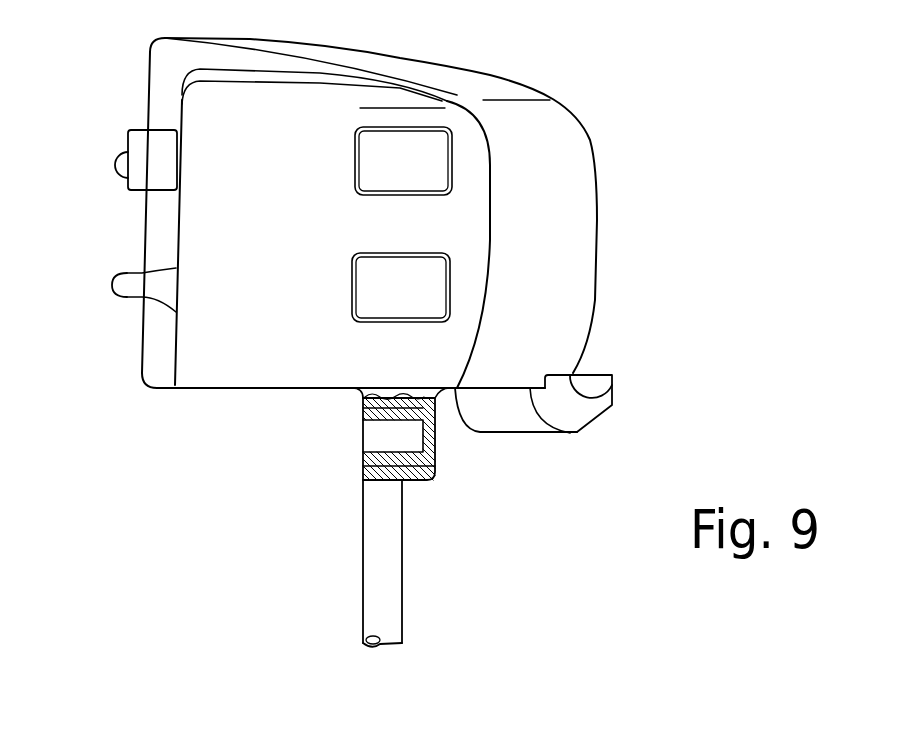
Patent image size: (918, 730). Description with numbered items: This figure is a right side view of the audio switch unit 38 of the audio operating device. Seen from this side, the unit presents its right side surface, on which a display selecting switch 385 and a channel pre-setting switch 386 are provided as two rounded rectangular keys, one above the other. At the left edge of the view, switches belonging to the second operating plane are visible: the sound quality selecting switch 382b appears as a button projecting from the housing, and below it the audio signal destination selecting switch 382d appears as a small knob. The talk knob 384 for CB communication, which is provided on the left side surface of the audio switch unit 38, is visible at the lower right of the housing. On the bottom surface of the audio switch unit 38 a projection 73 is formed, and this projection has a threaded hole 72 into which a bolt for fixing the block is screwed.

The audio switch unit 38 is at (612, 140).
The sound quality selecting switch 382b is at (147, 143).
The audio signal destination selecting switch 382d is at (133, 300).
The talk knob 384 is at (577, 412).
The display selecting switch 385 is at (430, 143).
The channel pre-setting switch 386 is at (372, 308).
The threaded hole 72 is at (386, 450).
The projection 73 is at (433, 472).